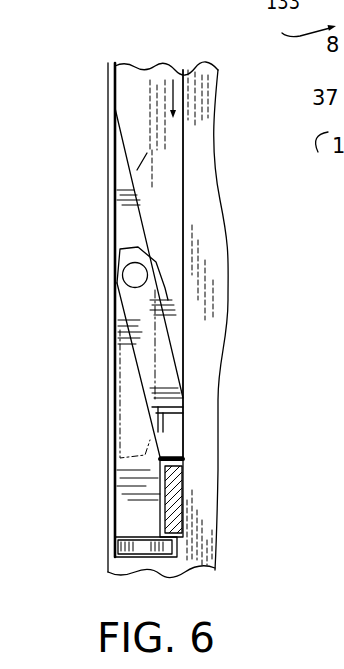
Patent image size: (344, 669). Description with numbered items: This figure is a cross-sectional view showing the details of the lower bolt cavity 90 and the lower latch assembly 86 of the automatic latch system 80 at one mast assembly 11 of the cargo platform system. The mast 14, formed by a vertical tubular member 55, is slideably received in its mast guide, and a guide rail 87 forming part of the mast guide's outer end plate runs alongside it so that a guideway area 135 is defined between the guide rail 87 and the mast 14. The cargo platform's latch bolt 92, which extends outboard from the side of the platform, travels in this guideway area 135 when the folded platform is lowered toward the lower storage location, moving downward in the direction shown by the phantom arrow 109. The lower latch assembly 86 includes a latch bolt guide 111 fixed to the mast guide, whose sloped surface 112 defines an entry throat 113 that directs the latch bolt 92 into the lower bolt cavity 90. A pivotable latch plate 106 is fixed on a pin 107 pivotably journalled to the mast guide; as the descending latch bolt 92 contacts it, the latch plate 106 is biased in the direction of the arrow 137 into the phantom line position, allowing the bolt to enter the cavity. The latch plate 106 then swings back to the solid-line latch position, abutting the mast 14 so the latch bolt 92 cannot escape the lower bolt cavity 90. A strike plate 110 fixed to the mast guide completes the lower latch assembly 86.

The mast assembly 11 is at (224, 71).
The mast 14 is at (208, 178).
The vertical tubular member 55 is at (220, 228).
The automatic latch system 80 is at (213, 362).
The lower latch assembly 86 is at (194, 337).
The guide rail 87 is at (107, 74).
The lower bolt cavity 90 is at (181, 462).
The latch bolt 92 is at (175, 515).
The latch plate 106 is at (146, 354).
The pin 107 is at (130, 277).
The phantom arrow 109 is at (173, 94).
The strike plate 110 is at (115, 550).
The latch bolt guide 111 is at (125, 232).
The sloped surface 112 is at (147, 153).
The entry throat 113 is at (167, 200).
The guideway area 135 is at (182, 62).
The arrow 137 is at (146, 423).